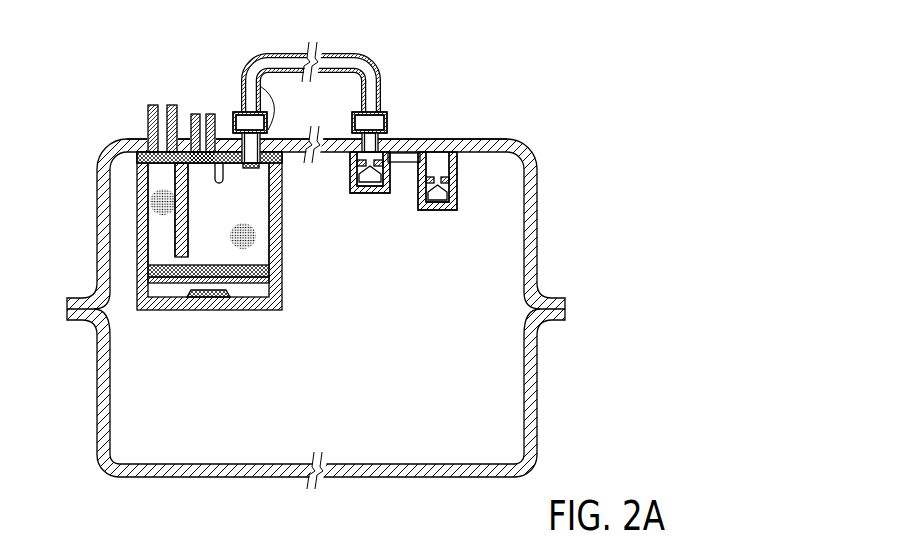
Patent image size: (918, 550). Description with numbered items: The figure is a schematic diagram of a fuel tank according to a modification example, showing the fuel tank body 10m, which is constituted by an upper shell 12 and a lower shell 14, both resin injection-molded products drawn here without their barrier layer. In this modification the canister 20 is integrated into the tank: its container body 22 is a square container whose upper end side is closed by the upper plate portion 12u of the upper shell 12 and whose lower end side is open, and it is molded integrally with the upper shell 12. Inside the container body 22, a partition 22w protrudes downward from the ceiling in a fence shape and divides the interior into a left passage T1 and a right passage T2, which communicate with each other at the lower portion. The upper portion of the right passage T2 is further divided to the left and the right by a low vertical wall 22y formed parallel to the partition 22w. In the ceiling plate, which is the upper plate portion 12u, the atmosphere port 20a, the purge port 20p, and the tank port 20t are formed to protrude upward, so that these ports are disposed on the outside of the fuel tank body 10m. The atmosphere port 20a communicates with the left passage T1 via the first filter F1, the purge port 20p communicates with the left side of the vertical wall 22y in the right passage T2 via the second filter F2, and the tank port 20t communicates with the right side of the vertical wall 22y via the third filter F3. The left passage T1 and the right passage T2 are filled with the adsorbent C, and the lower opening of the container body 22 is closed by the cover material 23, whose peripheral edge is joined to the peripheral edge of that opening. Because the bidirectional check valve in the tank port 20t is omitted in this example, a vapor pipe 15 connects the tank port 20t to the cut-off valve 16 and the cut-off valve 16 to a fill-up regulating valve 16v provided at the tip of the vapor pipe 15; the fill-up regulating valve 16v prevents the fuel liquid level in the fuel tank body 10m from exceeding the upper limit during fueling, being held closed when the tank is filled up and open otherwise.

The fuel tank body 10m is at (336, 270).
The upper shell 12 is at (316, 180).
The upper plate portion 12u is at (440, 139).
The lower shell 14 is at (541, 406).
The vapor pipe 15 is at (345, 54).
The cut-off valve 16 is at (368, 195).
The fill-up regulating valve 16v is at (442, 212).
The canister 20 is at (222, 194).
The atmosphere port 20a is at (147, 104).
The purge port 20p is at (196, 112).
The tank port 20t is at (281, 103).
The container body 22 is at (180, 217).
The partition 22w is at (175, 177).
The vertical wall 22y is at (226, 151).
The cover material 23 is at (236, 300).
The adsorbent C is at (258, 236).
The first filter F1 is at (172, 193).
The second filter F2 is at (199, 164).
The third filter F3 is at (246, 165).
The left passage T1 is at (160, 228).
The right passage T2 is at (229, 203).